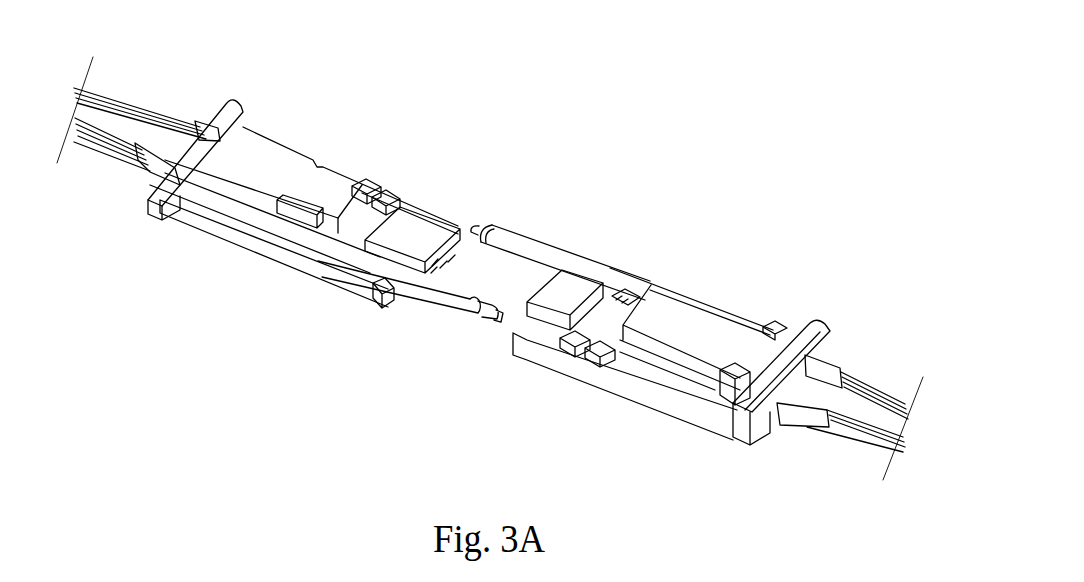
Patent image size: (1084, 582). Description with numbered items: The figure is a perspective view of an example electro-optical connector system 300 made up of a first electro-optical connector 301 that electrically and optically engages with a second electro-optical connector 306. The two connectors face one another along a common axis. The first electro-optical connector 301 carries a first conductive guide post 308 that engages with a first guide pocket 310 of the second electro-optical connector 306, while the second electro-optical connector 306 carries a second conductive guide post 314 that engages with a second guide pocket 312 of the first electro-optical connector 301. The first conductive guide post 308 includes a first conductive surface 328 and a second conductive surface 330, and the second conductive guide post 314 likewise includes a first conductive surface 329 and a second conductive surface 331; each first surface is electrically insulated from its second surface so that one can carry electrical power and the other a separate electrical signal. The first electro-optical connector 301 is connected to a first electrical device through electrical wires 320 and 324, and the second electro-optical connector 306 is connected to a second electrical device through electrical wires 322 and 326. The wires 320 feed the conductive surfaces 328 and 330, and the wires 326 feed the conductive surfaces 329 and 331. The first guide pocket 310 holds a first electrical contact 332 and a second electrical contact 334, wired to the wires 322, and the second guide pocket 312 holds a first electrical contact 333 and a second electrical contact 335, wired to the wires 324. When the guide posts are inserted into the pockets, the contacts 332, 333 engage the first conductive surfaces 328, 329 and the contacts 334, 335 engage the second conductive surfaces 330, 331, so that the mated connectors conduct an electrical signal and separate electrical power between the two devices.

The electro-optical connector system 300 is at (223, 58).
The first electro-optical connector 301 is at (216, 262).
The second electro-optical connector 306 is at (675, 429).
The first conductive guide post 308 is at (397, 311).
The first guide pocket 310 is at (534, 328).
The second guide pocket 312 is at (430, 213).
The second conductive guide post 314 is at (586, 240).
The electrical wires 320 is at (114, 172).
The electrical wires 322 is at (838, 449).
The electrical wires 324 is at (124, 98).
The electrical wires 326 is at (884, 379).
The first conductive surface 328 is at (447, 298).
The first conductive surface 329 is at (537, 247).
The second conductive surface 330 is at (484, 318).
The second conductive surface 331 is at (487, 233).
The first electrical contact 332 is at (572, 370).
The first electrical contact 333 is at (382, 205).
The second electrical contact 334 is at (602, 372).
The second electrical contact 335 is at (370, 195).